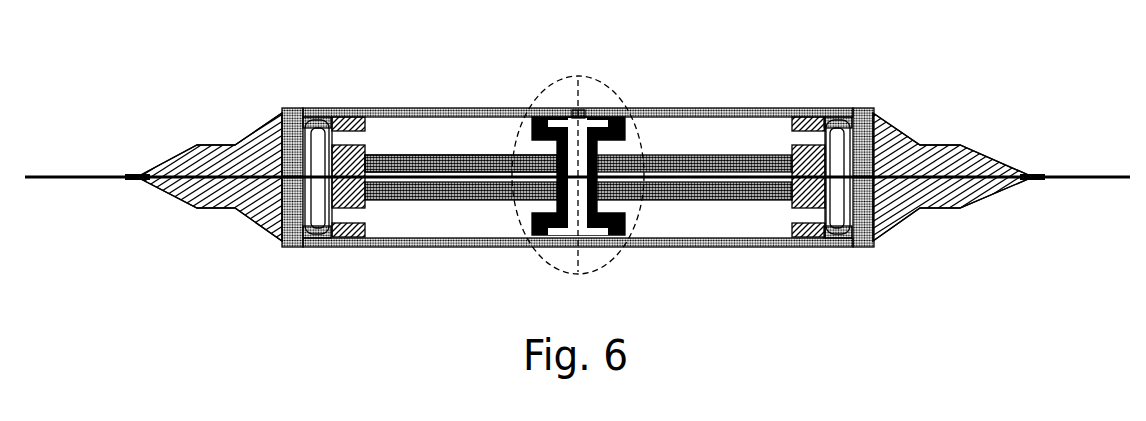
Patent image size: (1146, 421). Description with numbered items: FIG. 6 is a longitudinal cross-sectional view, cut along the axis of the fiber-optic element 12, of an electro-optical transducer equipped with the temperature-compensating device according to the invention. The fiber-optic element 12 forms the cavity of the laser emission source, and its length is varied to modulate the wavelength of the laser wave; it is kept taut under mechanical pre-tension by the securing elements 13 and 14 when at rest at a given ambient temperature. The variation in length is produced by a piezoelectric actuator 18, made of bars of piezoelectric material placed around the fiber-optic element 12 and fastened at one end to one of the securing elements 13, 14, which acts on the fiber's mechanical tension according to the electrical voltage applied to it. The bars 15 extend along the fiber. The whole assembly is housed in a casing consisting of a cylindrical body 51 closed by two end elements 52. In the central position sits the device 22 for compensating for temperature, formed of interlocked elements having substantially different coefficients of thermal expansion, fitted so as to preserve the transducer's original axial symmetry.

The fiber-optic element 12 is at (492, 200).
The securing element 13 is at (336, 198).
The securing element 14 is at (827, 108).
The rod 15 is at (417, 152).
The piezoelectric actuator 18 is at (477, 152).
The device for compensating for temperature 22 is at (620, 100).
The cylindrical body 51 is at (780, 247).
The end element 52 is at (278, 108).